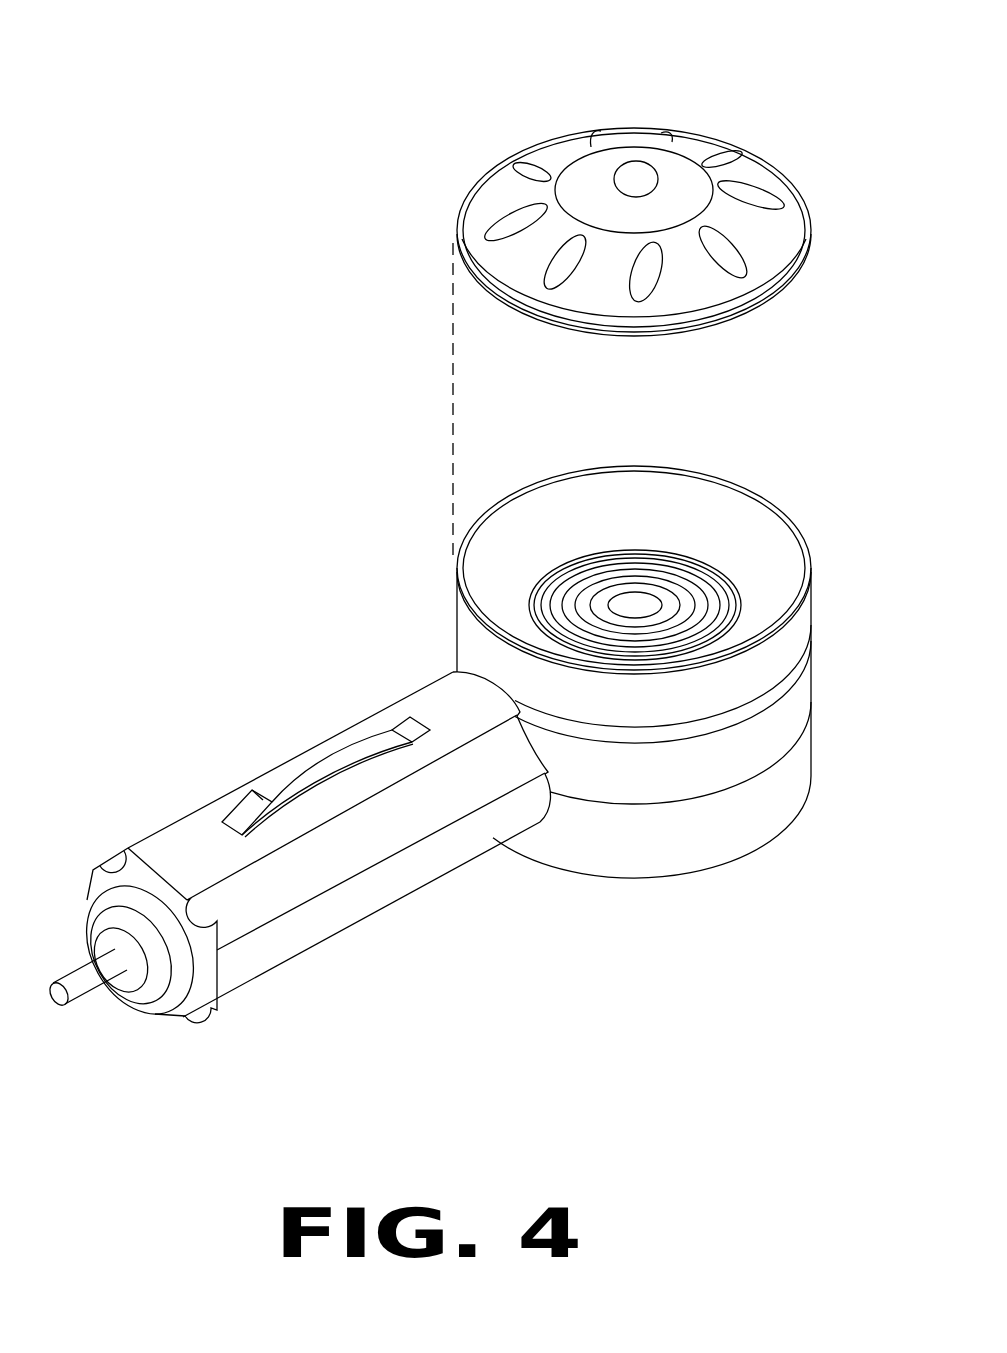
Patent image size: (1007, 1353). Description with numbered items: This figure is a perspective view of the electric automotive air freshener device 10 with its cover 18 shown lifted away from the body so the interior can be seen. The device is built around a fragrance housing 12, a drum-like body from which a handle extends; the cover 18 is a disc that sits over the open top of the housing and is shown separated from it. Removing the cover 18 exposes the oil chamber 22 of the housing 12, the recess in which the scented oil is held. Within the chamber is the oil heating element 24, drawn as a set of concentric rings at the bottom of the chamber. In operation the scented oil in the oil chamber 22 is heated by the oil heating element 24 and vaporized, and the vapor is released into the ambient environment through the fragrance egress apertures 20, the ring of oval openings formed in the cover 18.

The electric automotive air freshener device 10 is at (461, 521).
The fragrance housing 12 is at (660, 881).
The cover 18 is at (630, 150).
The fragrance egress apertures 20 is at (518, 217).
The oil chamber 22 is at (547, 500).
The oil heating element 24 is at (657, 588).